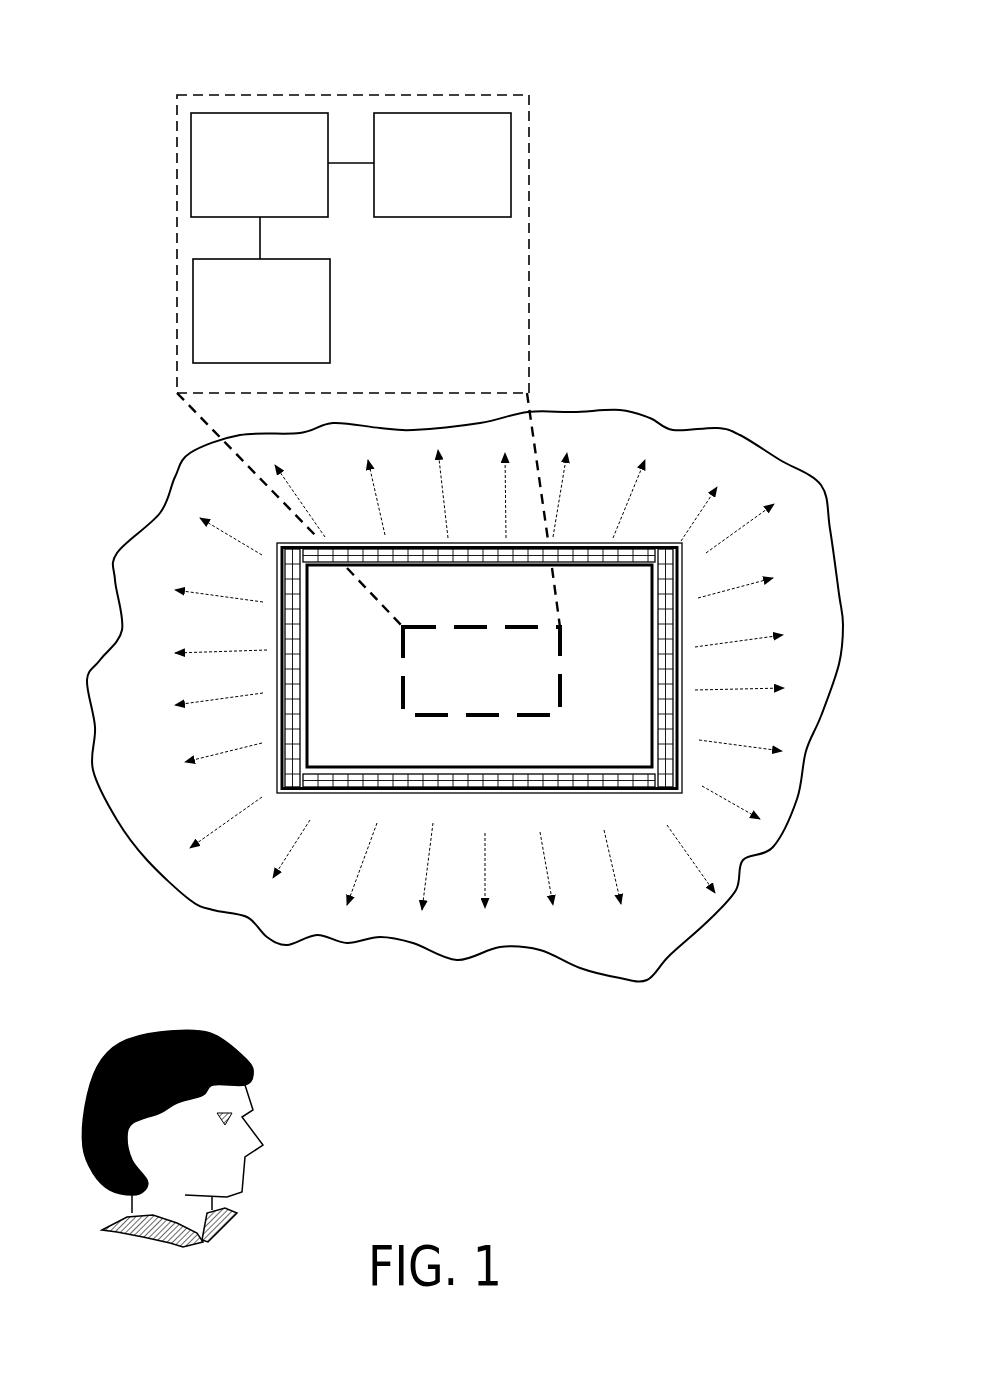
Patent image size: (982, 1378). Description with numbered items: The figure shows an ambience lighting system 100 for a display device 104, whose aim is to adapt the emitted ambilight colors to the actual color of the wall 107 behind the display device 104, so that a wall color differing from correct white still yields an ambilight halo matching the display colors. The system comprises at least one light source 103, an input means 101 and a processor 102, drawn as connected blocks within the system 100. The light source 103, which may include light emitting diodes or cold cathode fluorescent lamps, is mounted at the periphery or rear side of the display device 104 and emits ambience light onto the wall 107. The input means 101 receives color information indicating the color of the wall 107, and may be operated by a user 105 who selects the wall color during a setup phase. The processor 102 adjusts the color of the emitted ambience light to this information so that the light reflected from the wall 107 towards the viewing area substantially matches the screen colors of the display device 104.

The ambience lighting system 100 is at (353, 95).
The input means 101 is at (193, 318).
The processor 102 is at (511, 163).
The light source 103 is at (191, 163).
The display device 104 is at (357, 608).
The user 105 is at (122, 1048).
The wall 107 is at (618, 453).